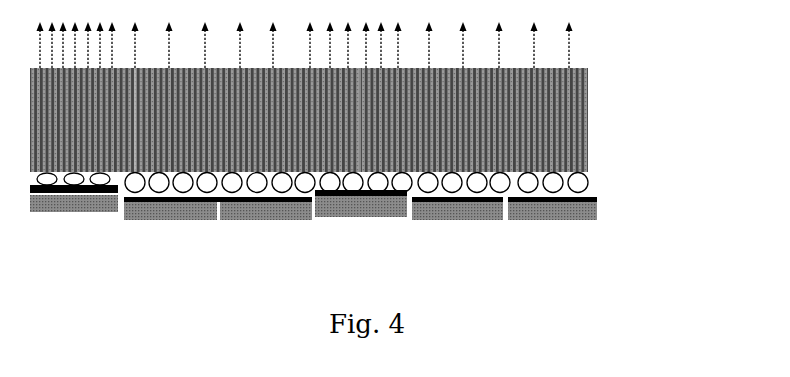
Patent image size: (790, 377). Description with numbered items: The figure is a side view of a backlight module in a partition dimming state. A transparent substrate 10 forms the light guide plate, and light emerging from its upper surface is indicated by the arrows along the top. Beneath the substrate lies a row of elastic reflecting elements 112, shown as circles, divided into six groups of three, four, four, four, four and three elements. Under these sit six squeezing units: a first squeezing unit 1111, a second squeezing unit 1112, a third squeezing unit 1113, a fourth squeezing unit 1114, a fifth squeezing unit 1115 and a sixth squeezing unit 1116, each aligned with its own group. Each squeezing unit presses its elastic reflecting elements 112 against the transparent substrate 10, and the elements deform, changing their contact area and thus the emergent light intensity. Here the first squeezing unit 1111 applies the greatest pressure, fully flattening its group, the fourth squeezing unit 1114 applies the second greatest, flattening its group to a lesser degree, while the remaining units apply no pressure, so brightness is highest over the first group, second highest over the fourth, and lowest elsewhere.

The transparent substrate 10 is at (588, 100).
The elastic reflecting element 112 is at (587, 176).
The first squeezing unit 1111 is at (75, 213).
The second squeezing unit 1112 is at (177, 221).
The third squeezing unit 1113 is at (260, 221).
The fourth squeezing unit 1114 is at (350, 218).
The fifth squeezing unit 1115 is at (458, 221).
The sixth squeezing unit 1116 is at (557, 221).